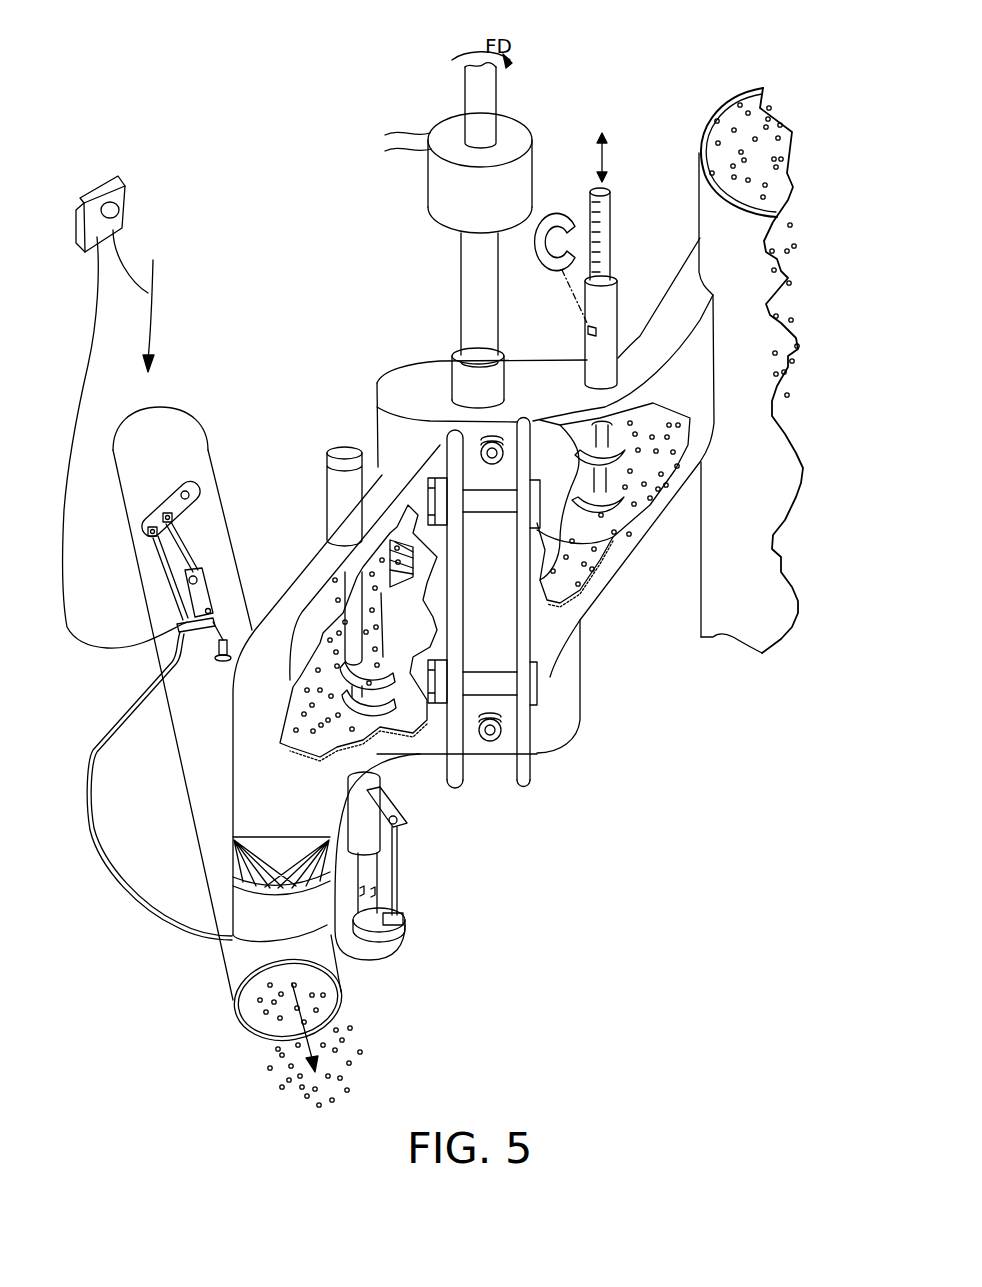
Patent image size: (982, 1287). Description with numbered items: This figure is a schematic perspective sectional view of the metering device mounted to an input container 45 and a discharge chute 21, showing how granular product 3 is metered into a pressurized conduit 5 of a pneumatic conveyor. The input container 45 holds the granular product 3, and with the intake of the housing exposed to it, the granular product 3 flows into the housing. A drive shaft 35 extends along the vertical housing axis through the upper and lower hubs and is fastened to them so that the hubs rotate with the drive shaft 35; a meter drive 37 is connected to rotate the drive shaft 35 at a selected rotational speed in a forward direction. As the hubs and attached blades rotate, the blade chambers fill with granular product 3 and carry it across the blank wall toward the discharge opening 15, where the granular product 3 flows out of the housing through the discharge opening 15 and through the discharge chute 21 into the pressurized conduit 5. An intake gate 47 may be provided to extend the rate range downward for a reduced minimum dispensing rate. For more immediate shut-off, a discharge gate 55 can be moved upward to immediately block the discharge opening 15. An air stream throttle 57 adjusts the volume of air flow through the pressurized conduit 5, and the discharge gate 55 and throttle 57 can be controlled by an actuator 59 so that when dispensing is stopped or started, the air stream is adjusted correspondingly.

The granular product 3 is at (752, 182).
The pressurized conduit 5 is at (190, 768).
The discharge opening 15 is at (390, 553).
The discharge chute 21 is at (281, 619).
The drive shaft 35 is at (461, 272).
The meter drive 37 is at (512, 118).
The input container 45 is at (715, 115).
The intake gate 47 is at (610, 543).
The discharge gate 55 is at (406, 697).
The air stream throttle 57 is at (198, 502).
The actuator 59 is at (187, 583).